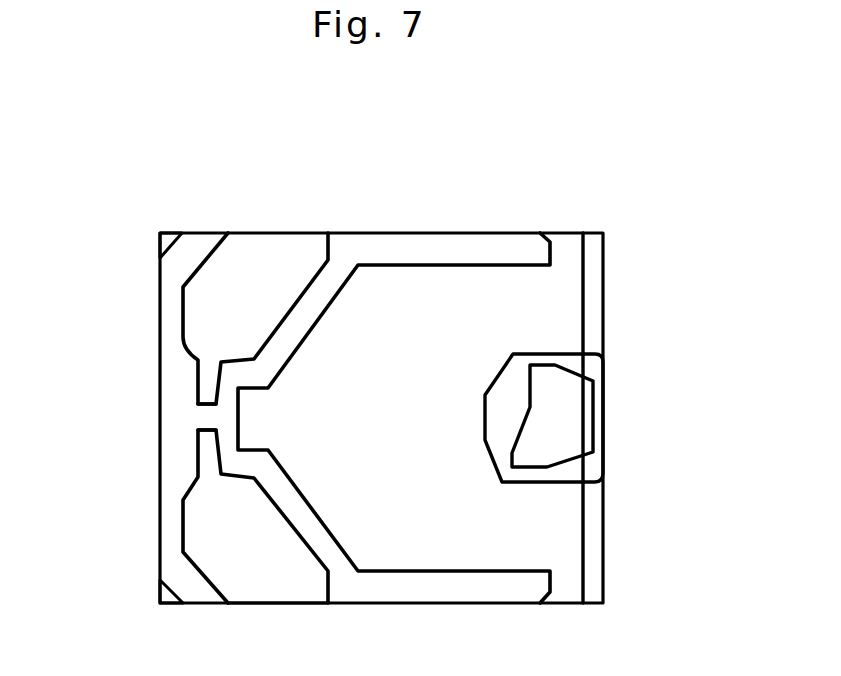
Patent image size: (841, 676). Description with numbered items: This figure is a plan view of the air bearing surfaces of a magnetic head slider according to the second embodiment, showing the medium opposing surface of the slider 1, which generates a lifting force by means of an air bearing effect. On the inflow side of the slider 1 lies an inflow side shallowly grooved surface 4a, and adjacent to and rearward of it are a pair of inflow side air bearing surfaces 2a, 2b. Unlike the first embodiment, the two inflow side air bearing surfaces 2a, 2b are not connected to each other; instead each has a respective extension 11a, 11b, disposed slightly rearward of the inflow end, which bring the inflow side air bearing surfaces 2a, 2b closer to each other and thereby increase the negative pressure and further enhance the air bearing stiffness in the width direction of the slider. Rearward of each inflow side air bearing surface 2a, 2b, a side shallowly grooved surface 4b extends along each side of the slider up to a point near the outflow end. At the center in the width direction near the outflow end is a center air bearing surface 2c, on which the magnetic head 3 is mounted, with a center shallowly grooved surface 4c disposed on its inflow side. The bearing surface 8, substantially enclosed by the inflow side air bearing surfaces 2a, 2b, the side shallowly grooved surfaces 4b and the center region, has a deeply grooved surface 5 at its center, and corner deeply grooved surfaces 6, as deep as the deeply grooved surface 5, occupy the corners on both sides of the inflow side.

The slider 1 is at (160, 325).
The inflow side air bearing surface 2a is at (250, 265).
The inflow side air bearing surface 2b is at (243, 538).
The center air bearing surface 2c is at (555, 418).
The magnetic head 3 is at (585, 423).
The inflow side shallowly grooved surface 4a is at (183, 300).
The side shallowly grooved surface 4b is at (388, 250).
The center shallowly grooved surface 4c is at (505, 400).
The deeply grooved surface 5 is at (432, 377).
The corner deeply grooved surface 6 is at (163, 233).
The bearing surface 8 is at (265, 600).
The extension 11a is at (206, 387).
The extension 11b is at (205, 453).